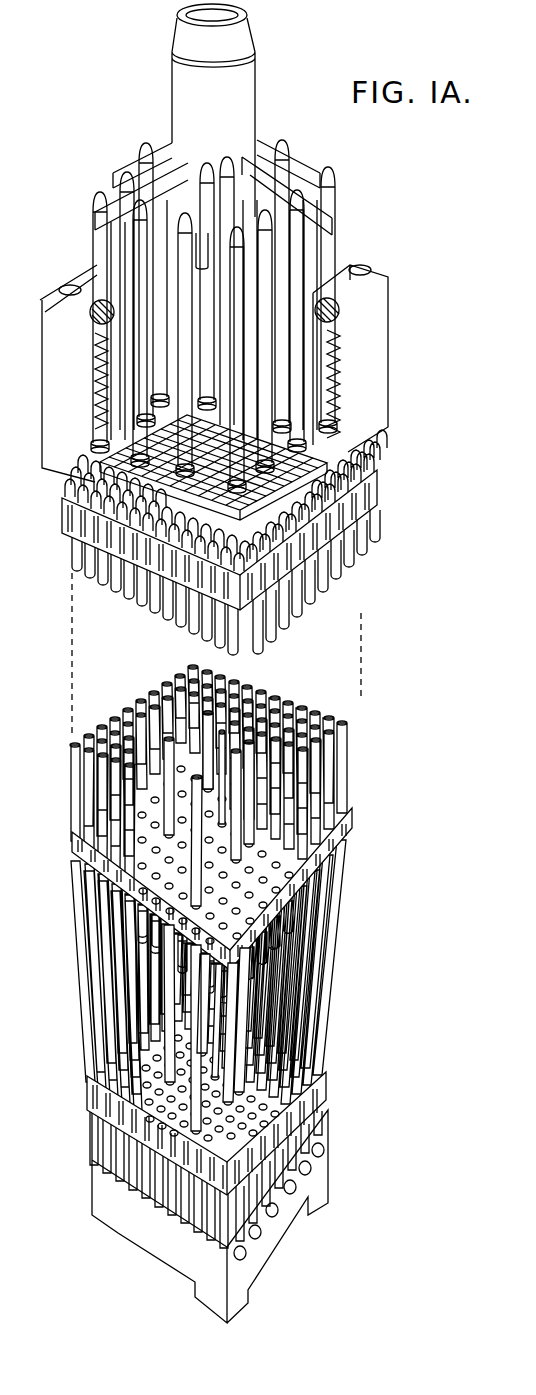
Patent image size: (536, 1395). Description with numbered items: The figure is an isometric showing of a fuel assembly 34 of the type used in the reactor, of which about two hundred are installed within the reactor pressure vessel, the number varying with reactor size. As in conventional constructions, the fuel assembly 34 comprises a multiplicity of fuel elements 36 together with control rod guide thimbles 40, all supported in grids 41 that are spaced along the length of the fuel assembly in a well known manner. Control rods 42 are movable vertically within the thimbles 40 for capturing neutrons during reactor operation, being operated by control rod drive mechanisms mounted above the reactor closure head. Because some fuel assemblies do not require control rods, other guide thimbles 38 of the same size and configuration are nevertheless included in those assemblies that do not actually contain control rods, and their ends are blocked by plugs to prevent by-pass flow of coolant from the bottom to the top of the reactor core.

The fuel assembly 34 is at (251, 663).
The fuel elements 36 is at (350, 710).
The guide thimbles 38 is at (207, 723).
The control rod guide thimbles 40 is at (257, 793).
The grids 41 is at (377, 507).
The control rods 42 is at (297, 252).